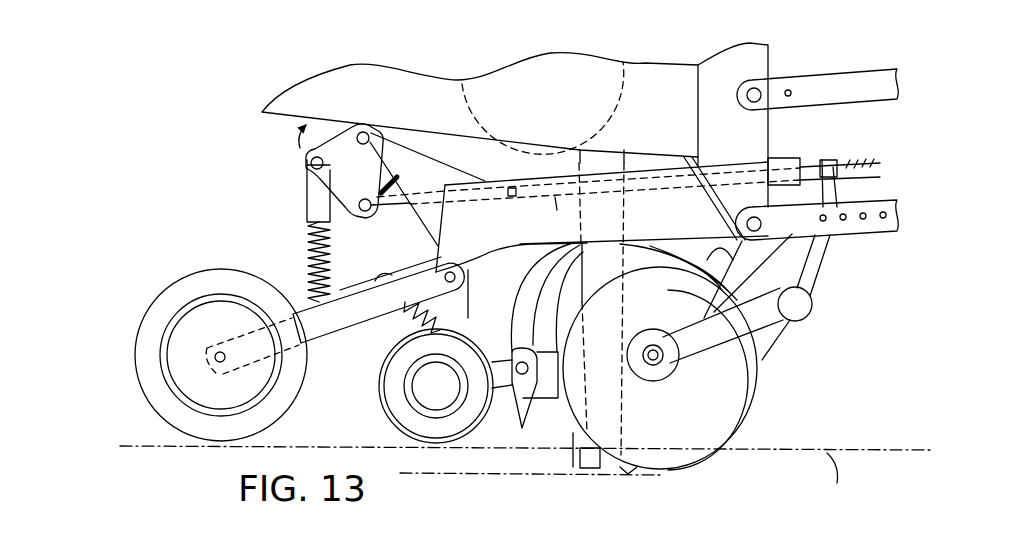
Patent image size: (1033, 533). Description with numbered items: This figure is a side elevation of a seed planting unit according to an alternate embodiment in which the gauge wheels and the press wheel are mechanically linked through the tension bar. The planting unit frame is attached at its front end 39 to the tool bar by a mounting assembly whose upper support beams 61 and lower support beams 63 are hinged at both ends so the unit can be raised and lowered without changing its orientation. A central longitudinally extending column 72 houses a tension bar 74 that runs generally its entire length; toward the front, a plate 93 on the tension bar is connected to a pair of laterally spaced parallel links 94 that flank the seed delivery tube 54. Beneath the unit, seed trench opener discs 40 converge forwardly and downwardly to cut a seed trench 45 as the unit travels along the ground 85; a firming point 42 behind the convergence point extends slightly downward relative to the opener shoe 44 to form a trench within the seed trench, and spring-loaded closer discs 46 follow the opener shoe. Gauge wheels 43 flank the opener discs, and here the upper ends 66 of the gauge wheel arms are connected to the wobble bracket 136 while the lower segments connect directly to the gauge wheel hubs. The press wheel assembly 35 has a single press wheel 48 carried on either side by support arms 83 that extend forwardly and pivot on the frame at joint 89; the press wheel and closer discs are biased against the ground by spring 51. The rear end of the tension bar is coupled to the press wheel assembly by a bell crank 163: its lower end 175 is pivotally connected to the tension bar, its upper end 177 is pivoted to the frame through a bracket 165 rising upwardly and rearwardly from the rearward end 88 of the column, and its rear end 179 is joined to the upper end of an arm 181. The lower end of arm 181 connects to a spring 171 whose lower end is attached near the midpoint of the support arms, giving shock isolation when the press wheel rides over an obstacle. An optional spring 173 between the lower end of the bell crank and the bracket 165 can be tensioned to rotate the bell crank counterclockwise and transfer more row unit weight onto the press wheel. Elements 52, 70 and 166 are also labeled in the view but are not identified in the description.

The press wheel assembly 35 is at (178, 347).
The front end 39 is at (745, 143).
The seed trench opener discs 40 is at (572, 450).
The seed trench firming point 42 is at (653, 458).
The gauge wheels 43 is at (713, 393).
The opener shoe 44 is at (593, 470).
The seed trench 45 is at (513, 473).
The seed-trench closer discs 46 is at (417, 427).
The press wheel 48 is at (143, 400).
The spring 51 is at (441, 314).
The seed hopper 52 is at (622, 102).
The seed delivery tube 54 is at (625, 208).
The upper support beams 61 is at (828, 74).
The lower support beams 63 is at (867, 233).
The upper ends of gauge wheel arm 66 is at (826, 160).
The disc arm pivot 70 is at (812, 310).
The column 72 is at (472, 246).
The tension bar 74 is at (485, 205).
The support arm 83 is at (350, 330).
The ground 85 is at (847, 477).
The rearward end of column 88 is at (437, 250).
The joint 89 is at (456, 277).
The plate 93 is at (516, 192).
The parallel links 94 is at (557, 205).
The wobble bracket 136 is at (828, 160).
The bell crank 163 is at (317, 190).
The bracket 165 is at (447, 158).
The threaded rod 166 is at (860, 160).
The spring 171 is at (307, 250).
The optional spring 173 is at (372, 178).
The lower end of bell crank 175 is at (368, 213).
The upper end of bell crank 177 is at (367, 128).
The rear end of bell crank 179 is at (307, 155).
The arm 181 is at (305, 208).